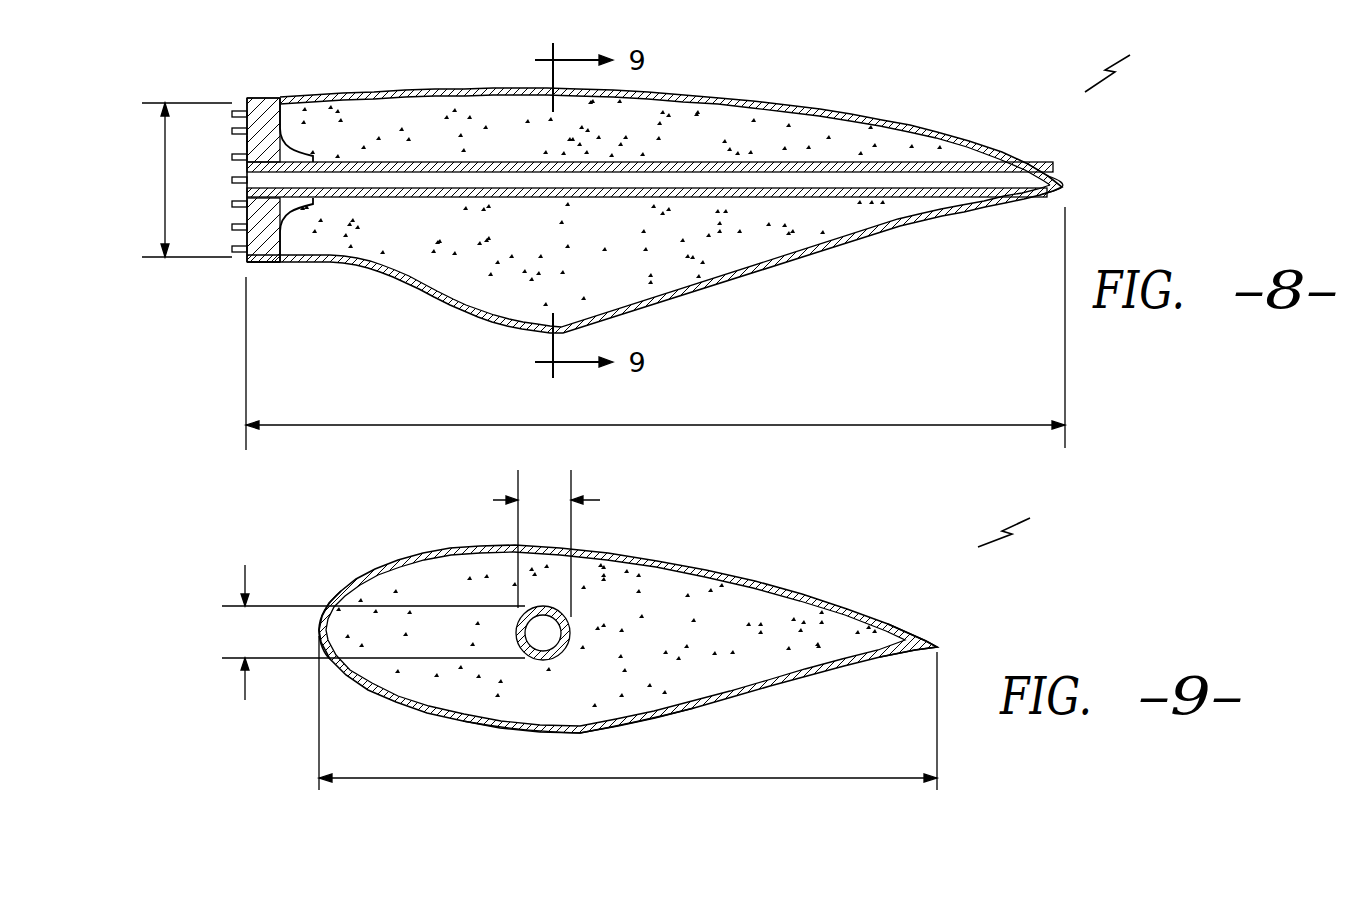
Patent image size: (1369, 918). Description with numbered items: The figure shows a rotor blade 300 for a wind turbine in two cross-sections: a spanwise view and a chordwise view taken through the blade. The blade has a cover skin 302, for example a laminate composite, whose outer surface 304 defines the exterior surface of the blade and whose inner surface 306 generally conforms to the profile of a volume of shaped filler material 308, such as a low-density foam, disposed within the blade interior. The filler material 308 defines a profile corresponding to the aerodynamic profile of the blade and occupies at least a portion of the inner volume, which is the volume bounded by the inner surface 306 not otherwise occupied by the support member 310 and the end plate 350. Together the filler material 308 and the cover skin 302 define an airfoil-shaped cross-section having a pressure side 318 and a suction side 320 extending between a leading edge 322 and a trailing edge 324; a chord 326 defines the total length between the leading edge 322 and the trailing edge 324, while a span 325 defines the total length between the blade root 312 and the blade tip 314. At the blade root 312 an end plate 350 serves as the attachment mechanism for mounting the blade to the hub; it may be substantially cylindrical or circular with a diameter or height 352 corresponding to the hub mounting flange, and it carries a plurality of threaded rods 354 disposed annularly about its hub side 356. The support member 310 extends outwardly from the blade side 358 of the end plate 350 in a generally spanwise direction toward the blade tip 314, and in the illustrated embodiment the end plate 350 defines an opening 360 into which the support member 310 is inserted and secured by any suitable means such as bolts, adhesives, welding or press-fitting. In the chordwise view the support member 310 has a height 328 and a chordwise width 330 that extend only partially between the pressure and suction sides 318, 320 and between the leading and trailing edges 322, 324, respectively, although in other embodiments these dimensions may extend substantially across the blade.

In FIG. 8, the rotor blade 300 is at (1135, 59).
In FIG. 9, the rotor blade 300 is at (1027, 518).
In FIG. 8, the cover skin 302 is at (871, 104).
In FIG. 9, the cover skin 302 is at (704, 548).
In FIG. 8, the outer surface 304 is at (948, 128).
In FIG. 9, the outer surface 304 is at (780, 578).
In FIG. 8, the inner surface 306 is at (770, 105).
In FIG. 9, the inner surface 306 is at (840, 608).
In FIG. 8, the filler material 308 is at (430, 118).
In FIG. 9, the filler material 308 is at (437, 683).
In FIG. 8, the support member 310 is at (915, 197).
In FIG. 9, the support member 310 is at (573, 633).
In FIG. 8, the blade root 312 is at (267, 272).
In FIG. 8, the blade tip 314 is at (1066, 187).
In FIG. 9, the pressure side 318 is at (540, 730).
In FIG. 9, the suction side 320 is at (512, 543).
In FIG. 8, the leading edge 322 is at (500, 88).
In FIG. 9, the leading edge 322 is at (319, 628).
In FIG. 8, the trailing edge 324 is at (676, 300).
In FIG. 9, the trailing edge 324 is at (940, 647).
In FIG. 8, the span 325 is at (792, 425).
In FIG. 9, the chord 326 is at (712, 778).
In FIG. 9, the height 328 is at (244, 568).
In FIG. 9, the chordwise width 330 is at (600, 500).
In FIG. 8, the end plate 350 is at (263, 122).
In FIG. 8, the height 352 is at (165, 180).
In FIG. 8, the threaded rods 354 is at (232, 113).
In FIG. 8, the hub side 356 is at (243, 143).
In FIG. 8, the blade side 358 is at (292, 142).
In FIG. 8, the opening 360 is at (283, 233).